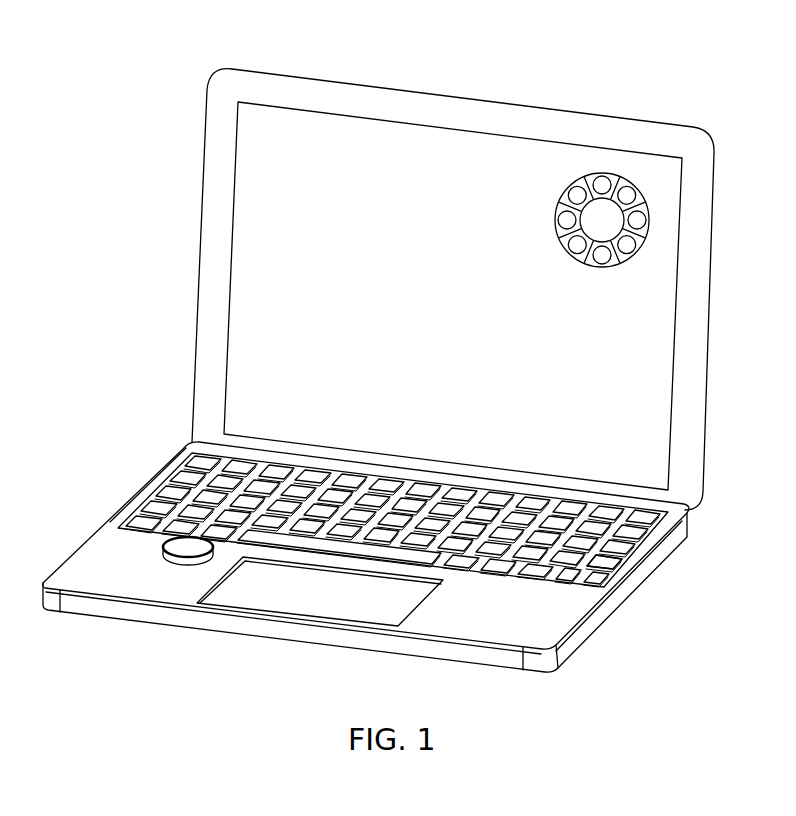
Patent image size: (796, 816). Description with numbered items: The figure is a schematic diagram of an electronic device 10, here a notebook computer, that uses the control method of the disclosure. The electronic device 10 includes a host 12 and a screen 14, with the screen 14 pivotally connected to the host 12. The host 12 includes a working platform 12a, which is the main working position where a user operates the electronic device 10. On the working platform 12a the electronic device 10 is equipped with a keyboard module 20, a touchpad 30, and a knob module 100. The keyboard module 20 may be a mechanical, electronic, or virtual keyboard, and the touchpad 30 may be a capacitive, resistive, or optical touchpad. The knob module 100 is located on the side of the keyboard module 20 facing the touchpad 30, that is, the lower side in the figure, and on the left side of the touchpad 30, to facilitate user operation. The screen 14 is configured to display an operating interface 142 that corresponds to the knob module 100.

The electronic device 10 is at (163, 100).
The host 12 is at (143, 478).
The working platform 12a is at (132, 540).
The screen 14 is at (202, 215).
The keyboard module 20 is at (637, 538).
The touchpad 30 is at (312, 626).
The knob module 100 is at (180, 553).
The operating interface 142 is at (602, 225).